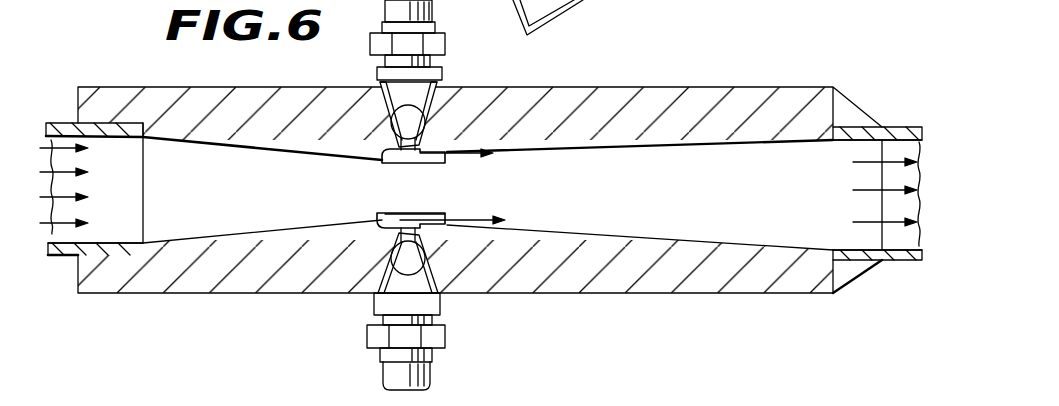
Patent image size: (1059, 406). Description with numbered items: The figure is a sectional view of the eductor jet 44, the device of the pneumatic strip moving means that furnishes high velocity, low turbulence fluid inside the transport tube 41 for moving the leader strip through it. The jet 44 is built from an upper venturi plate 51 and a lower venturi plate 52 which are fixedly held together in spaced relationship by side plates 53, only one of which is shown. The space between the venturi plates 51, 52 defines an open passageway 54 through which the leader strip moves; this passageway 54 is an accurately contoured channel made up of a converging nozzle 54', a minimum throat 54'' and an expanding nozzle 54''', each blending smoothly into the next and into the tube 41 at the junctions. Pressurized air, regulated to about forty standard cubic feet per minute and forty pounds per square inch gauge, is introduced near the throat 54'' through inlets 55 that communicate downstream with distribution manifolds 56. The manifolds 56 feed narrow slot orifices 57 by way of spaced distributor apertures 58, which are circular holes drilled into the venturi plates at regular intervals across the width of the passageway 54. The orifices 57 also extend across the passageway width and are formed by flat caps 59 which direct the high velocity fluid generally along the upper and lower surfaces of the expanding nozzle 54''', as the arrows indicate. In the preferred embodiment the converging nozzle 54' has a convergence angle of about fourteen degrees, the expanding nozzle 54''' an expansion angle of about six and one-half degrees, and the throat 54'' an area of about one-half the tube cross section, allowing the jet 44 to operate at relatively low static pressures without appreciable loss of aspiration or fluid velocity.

The tube 41 is at (61, 124).
The eductor jet 44 is at (716, 70).
The upper venturi plate 51 is at (785, 100).
The lower venturi plate 52 is at (732, 281).
The side plate 53 is at (680, 167).
The passageway 54 is at (480, 193).
The converging nozzle 54' is at (214, 183).
The minimum throat 54'' is at (509, 190).
The expanding nozzle 54''' is at (684, 195).
The inlet 55 is at (444, 82).
The distribution manifold 56 is at (414, 97).
The slot orifice 57 is at (483, 158).
The distributor aperture 58 is at (445, 146).
The flat cap 59 is at (447, 207).